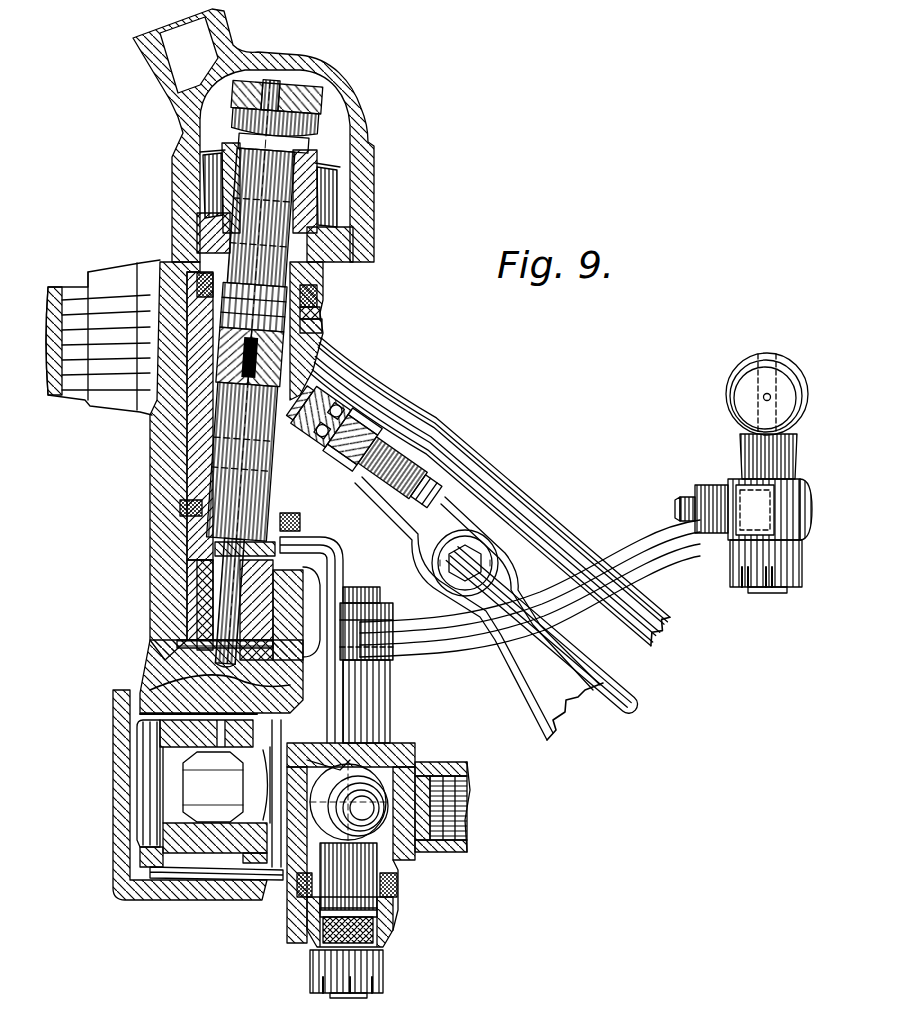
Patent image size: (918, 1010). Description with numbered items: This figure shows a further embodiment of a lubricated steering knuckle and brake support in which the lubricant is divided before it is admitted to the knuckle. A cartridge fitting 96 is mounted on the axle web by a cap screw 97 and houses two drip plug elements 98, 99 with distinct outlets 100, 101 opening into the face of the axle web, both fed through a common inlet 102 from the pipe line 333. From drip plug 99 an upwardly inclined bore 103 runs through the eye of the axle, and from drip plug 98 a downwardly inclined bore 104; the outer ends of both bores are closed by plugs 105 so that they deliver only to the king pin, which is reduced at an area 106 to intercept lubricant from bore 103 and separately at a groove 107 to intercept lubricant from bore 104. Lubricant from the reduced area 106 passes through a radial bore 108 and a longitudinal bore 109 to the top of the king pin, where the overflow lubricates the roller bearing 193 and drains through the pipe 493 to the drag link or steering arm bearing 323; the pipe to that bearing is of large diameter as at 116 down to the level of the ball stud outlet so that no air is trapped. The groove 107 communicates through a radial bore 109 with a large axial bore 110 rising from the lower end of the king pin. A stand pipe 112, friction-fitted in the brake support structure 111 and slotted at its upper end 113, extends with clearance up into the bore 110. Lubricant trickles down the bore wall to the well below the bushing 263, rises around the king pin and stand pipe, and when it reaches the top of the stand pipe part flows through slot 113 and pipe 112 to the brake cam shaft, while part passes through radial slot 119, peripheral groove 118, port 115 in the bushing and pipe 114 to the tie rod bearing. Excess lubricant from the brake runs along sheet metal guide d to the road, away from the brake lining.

The roller bearing 193 is at (338, 206).
The large-diameter pipe portion 116 is at (323, 292).
The longitudinal bore / radial bore 109 is at (313, 313).
The radial bore 108 is at (320, 328).
The upwardly inclined bore 103 is at (320, 352).
The outlet 101 is at (345, 403).
The cap screw 97 is at (305, 420).
The outlet 100 is at (338, 428).
The downwardly inclined bore 104 is at (355, 440).
The fitting 96 is at (312, 447).
The drip plug element 99 is at (335, 458).
The common inlet 102 is at (350, 480).
The pipe line 333 is at (453, 500).
The drag link or steering arm bearing (ball stud) 323 is at (787, 455).
The plug 105 is at (142, 399).
The reduced area 106 is at (193, 340).
The reduced area / groove 107 is at (207, 447).
The port 115 is at (302, 531).
The drip plug element 98 is at (338, 565).
The pipe 114 is at (345, 572).
The radial slot 119 is at (312, 582).
The peripheral groove 118 is at (227, 548).
The slot 113 is at (203, 554).
The bushing 263 is at (187, 590).
The axial bore 110 is at (190, 617).
The brake support structure 111 is at (213, 647).
The stand pipe 112 is at (190, 676).
The pipe 493 is at (413, 660).
The sheet metal guide d is at (237, 878).